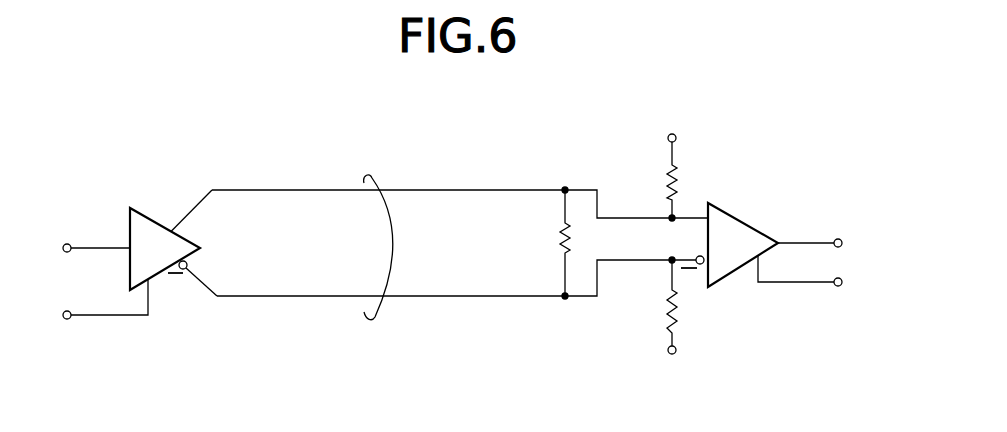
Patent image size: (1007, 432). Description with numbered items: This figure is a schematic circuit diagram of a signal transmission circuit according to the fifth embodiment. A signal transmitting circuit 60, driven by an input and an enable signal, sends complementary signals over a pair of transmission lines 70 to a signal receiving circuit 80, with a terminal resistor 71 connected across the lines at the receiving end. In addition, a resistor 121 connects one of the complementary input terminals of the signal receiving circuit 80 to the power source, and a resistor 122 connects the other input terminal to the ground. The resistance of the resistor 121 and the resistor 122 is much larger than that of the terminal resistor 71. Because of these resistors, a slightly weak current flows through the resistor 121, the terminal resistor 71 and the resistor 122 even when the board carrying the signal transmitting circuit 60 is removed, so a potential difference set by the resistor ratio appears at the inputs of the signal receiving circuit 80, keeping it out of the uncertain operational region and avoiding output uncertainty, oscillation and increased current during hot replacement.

The signal transmitting circuit 60 is at (143, 206).
The transmission lines 70 is at (372, 178).
The terminal resistor 71 is at (557, 240).
The resistor 121 is at (678, 178).
The resistor 122 is at (679, 313).
The signal receiving circuit 80 is at (741, 221).